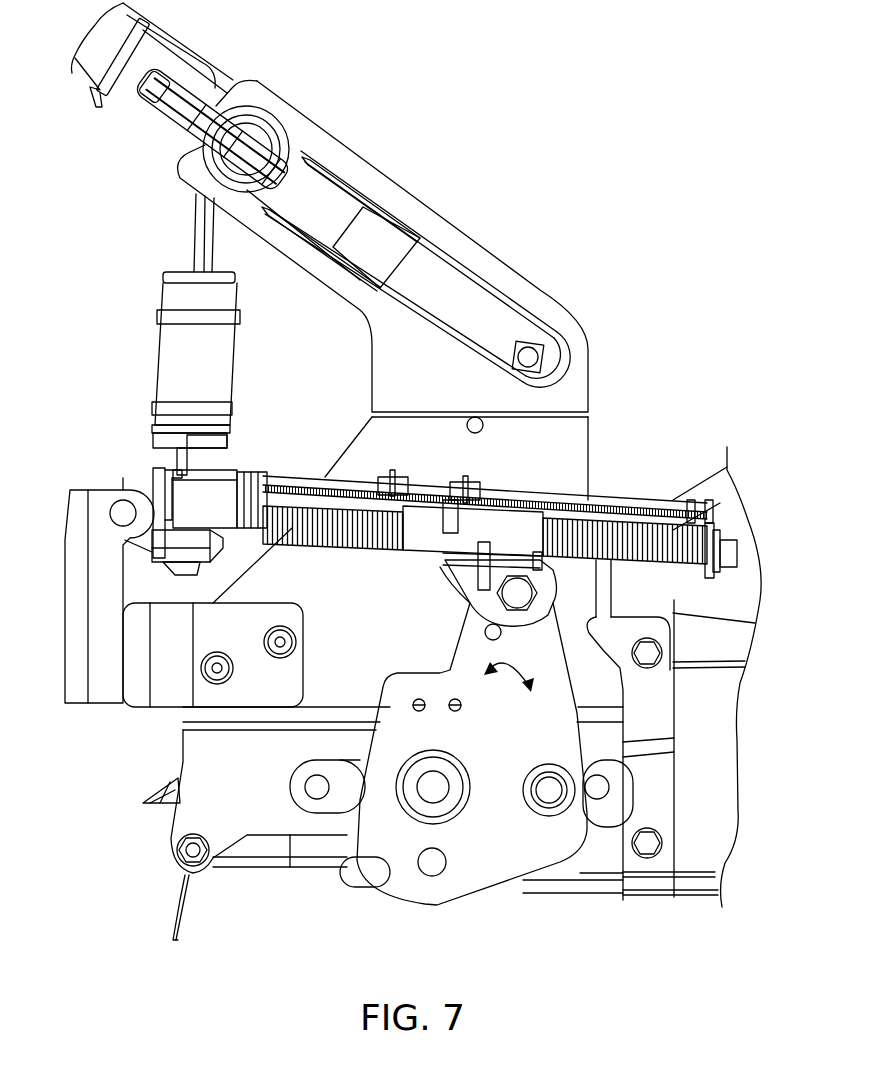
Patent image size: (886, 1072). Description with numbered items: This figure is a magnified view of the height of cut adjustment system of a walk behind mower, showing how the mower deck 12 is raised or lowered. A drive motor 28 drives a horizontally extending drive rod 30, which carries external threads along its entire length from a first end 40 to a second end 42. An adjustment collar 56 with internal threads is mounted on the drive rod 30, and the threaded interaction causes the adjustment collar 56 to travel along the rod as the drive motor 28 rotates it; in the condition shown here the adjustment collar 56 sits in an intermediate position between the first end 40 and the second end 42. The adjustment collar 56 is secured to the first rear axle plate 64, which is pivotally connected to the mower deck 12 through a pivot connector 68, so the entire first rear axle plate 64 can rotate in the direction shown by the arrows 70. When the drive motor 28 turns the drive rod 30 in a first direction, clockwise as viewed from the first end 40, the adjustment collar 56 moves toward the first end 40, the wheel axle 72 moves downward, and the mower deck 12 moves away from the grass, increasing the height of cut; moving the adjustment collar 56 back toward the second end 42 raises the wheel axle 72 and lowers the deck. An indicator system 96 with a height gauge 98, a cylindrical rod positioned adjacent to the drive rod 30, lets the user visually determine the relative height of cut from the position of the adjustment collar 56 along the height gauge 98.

The mower deck 12 is at (747, 590).
The drive motor 28 is at (158, 360).
The drive rod 30 is at (380, 547).
The first end 40 is at (662, 535).
The second end 42 is at (266, 520).
The adjustment collar 56 is at (522, 527).
The first rear axle plate 64 is at (487, 880).
The pivot connector 68 is at (471, 486).
The arrows 70 is at (509, 693).
The wheel axle 72 is at (535, 790).
The indicator system 96 is at (389, 470).
The height gauge 98 is at (614, 497).